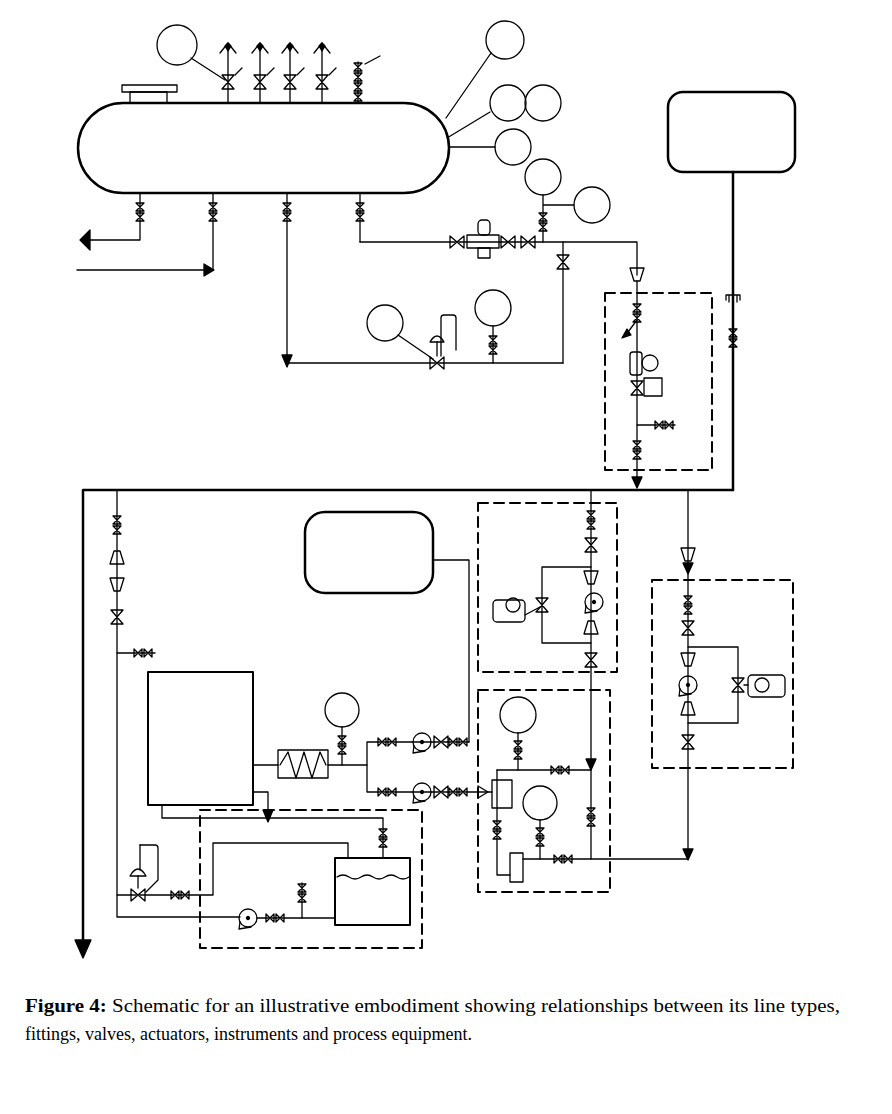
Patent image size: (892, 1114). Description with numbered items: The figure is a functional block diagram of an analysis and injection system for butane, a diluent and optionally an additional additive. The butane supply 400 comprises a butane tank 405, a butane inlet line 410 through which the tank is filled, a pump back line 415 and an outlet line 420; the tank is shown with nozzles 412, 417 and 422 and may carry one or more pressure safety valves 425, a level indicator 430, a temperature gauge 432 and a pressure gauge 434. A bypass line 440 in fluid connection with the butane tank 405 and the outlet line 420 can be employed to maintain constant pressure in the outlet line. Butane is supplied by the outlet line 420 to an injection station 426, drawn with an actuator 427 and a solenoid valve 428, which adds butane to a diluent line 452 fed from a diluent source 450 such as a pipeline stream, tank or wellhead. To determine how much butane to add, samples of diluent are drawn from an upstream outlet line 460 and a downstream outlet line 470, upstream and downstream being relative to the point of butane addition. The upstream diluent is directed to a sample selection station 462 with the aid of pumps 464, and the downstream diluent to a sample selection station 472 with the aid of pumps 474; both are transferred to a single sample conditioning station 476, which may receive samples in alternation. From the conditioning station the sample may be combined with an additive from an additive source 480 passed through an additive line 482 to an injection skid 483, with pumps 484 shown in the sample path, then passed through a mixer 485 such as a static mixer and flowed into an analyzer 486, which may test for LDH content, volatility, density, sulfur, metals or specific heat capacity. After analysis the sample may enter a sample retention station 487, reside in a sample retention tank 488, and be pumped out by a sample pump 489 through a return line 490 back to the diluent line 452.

The butane supply 400 is at (153, 70).
The butane tank 405 is at (122, 93).
The butane inlet line 410 is at (145, 274).
The tank nozzle 412 is at (205, 202).
The pump back line 415 is at (128, 243).
The tank nozzle 417 is at (133, 202).
The outlet line 420 is at (405, 246).
The tank outlet nozzle 422 is at (355, 202).
The pressure safety valves 425 is at (330, 80).
The injection station 426 is at (606, 408).
The valve actuator 427 is at (650, 355).
The solenoid valve 428 is at (650, 396).
The level indicator 430 is at (562, 98).
The temperature gauge 432 is at (524, 44).
The pressure gauge 434 is at (530, 160).
The bypass line 440 is at (363, 360).
The diluent source 450 is at (745, 92).
The diluent line 452 is at (737, 225).
The upstream outlet line 460 is at (692, 508).
The sample selection station 462 is at (715, 772).
The pumps 464 is at (682, 690).
The downstream outlet line 470 is at (593, 493).
The sample selection station 472 is at (617, 532).
The pumps 474 is at (600, 605).
The sample conditioning station 476 is at (538, 893).
The additive source 480 is at (305, 545).
The additive line 482 is at (467, 642).
The injection skid 483 is at (372, 715).
The sample pumps 484 is at (358, 740).
The mixer 485 is at (300, 750).
The analyzer 486 is at (195, 672).
The sample retention station 487 is at (422, 912).
The sample retention tank 488 is at (372, 891).
The sample pump 489 is at (240, 920).
The return line 490 is at (120, 500).